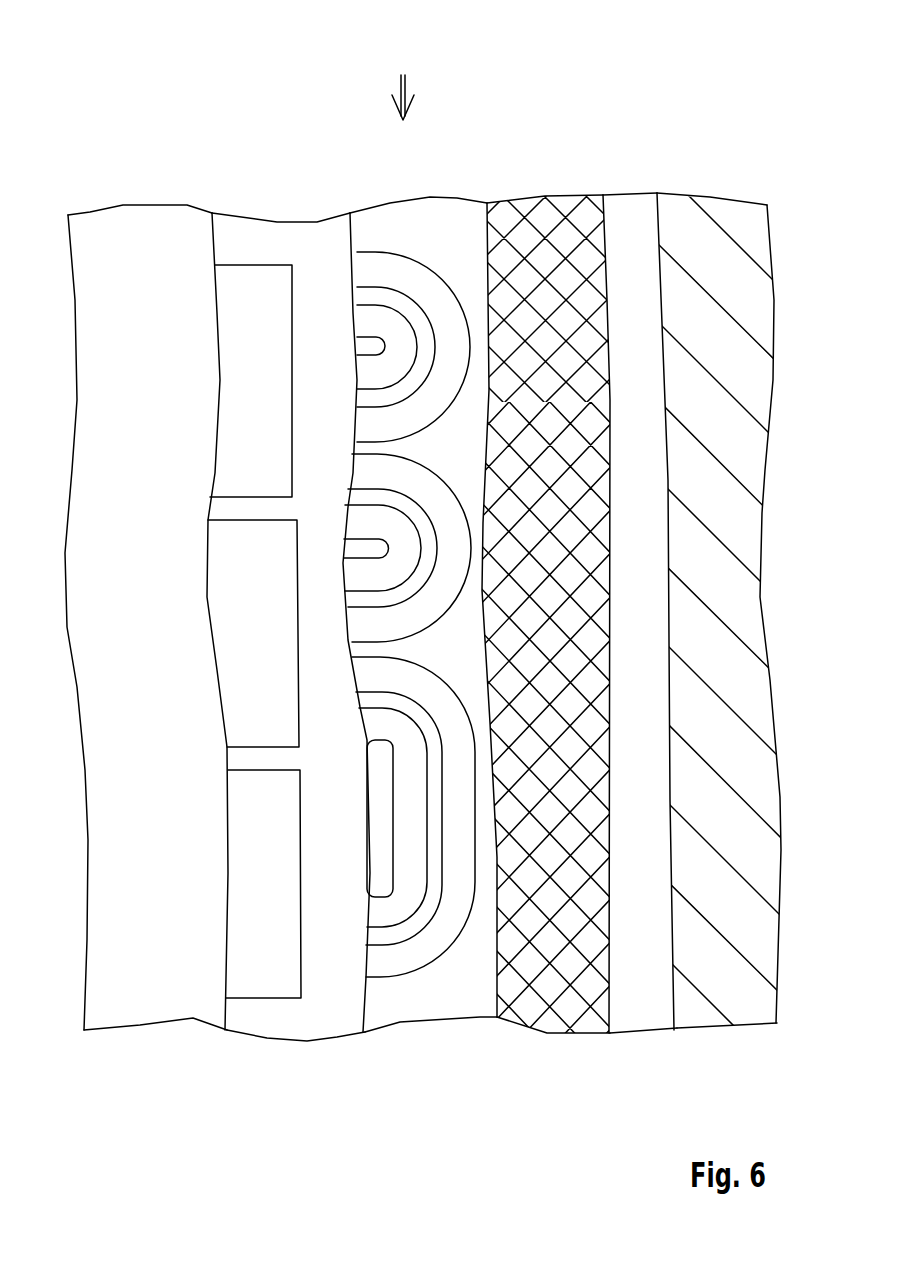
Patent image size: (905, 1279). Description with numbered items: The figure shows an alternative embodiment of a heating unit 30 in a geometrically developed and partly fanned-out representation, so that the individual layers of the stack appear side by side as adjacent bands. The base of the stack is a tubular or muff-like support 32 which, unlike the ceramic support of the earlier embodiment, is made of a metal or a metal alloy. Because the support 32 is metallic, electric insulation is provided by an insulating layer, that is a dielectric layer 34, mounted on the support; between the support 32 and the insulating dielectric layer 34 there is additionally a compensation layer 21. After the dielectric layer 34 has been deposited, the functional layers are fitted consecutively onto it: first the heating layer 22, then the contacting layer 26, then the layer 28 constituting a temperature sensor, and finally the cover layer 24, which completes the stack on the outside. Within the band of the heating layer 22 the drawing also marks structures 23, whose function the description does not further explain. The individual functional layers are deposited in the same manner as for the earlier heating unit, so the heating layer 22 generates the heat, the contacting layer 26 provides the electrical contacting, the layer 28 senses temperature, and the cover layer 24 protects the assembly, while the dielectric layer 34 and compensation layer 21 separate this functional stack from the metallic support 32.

The compensation layer 21 is at (630, 220).
The heating layer 22 is at (441, 245).
The raised structures 23 is at (373, 323).
The cover layer 24 is at (142, 227).
The contacting layer 26 is at (290, 240).
The layer constituting a temperature sensor 28 is at (239, 295).
The heating unit 30 is at (399, 72).
The support 32 is at (706, 232).
The insulating layer / dielectric layer 34 is at (578, 223).